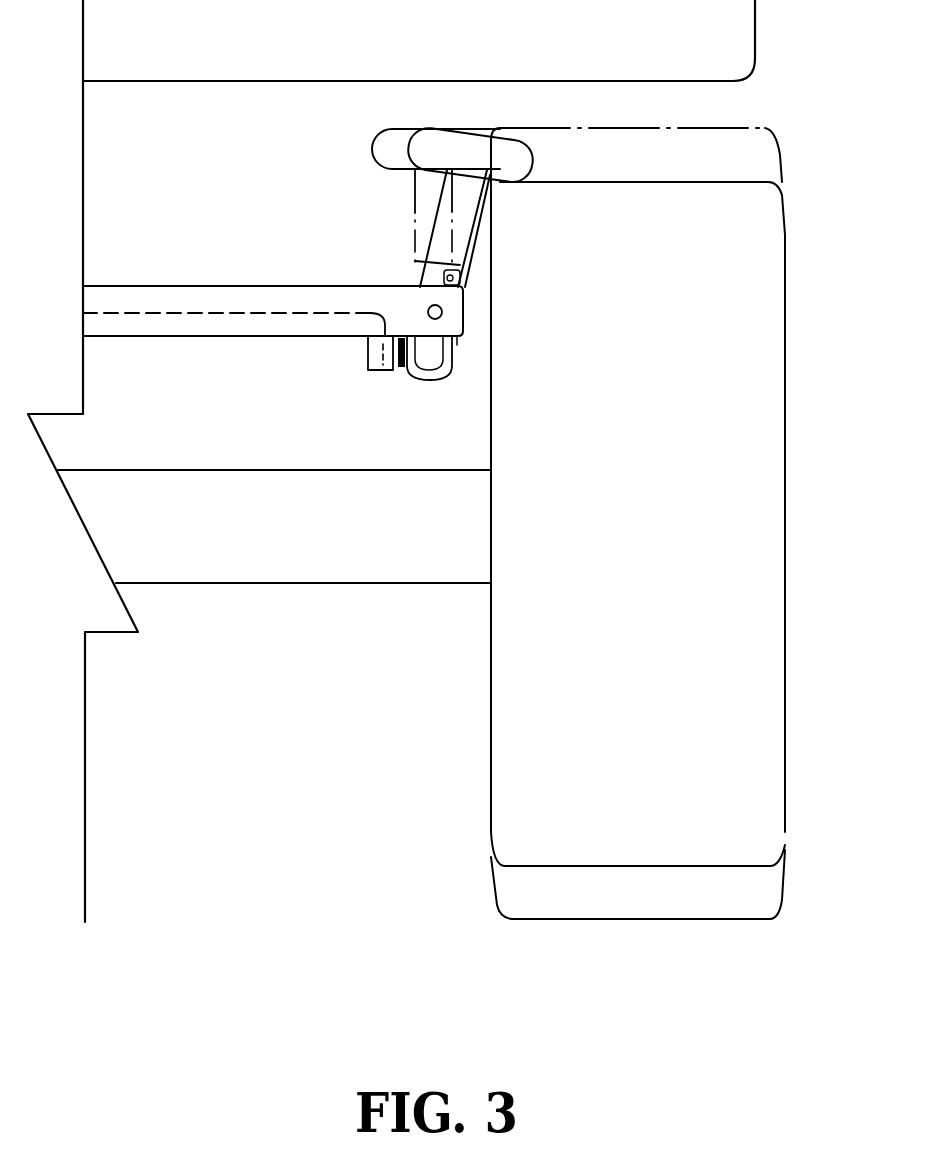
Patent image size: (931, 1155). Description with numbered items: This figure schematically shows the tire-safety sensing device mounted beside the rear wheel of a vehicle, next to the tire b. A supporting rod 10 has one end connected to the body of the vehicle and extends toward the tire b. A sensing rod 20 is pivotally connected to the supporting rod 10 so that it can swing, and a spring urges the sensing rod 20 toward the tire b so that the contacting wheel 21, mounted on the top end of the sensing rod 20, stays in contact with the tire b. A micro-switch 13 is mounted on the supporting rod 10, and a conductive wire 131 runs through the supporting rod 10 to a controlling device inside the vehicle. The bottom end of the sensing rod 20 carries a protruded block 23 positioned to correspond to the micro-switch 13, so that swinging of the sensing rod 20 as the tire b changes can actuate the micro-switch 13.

The supporting rod 10 is at (204, 322).
The conductive wire 131 is at (148, 307).
The micro-switch 13 is at (383, 371).
The protruded block 23 is at (405, 353).
The sensing rod 20 is at (465, 222).
The contacting wheel 21 is at (518, 175).
The tire b is at (759, 500).